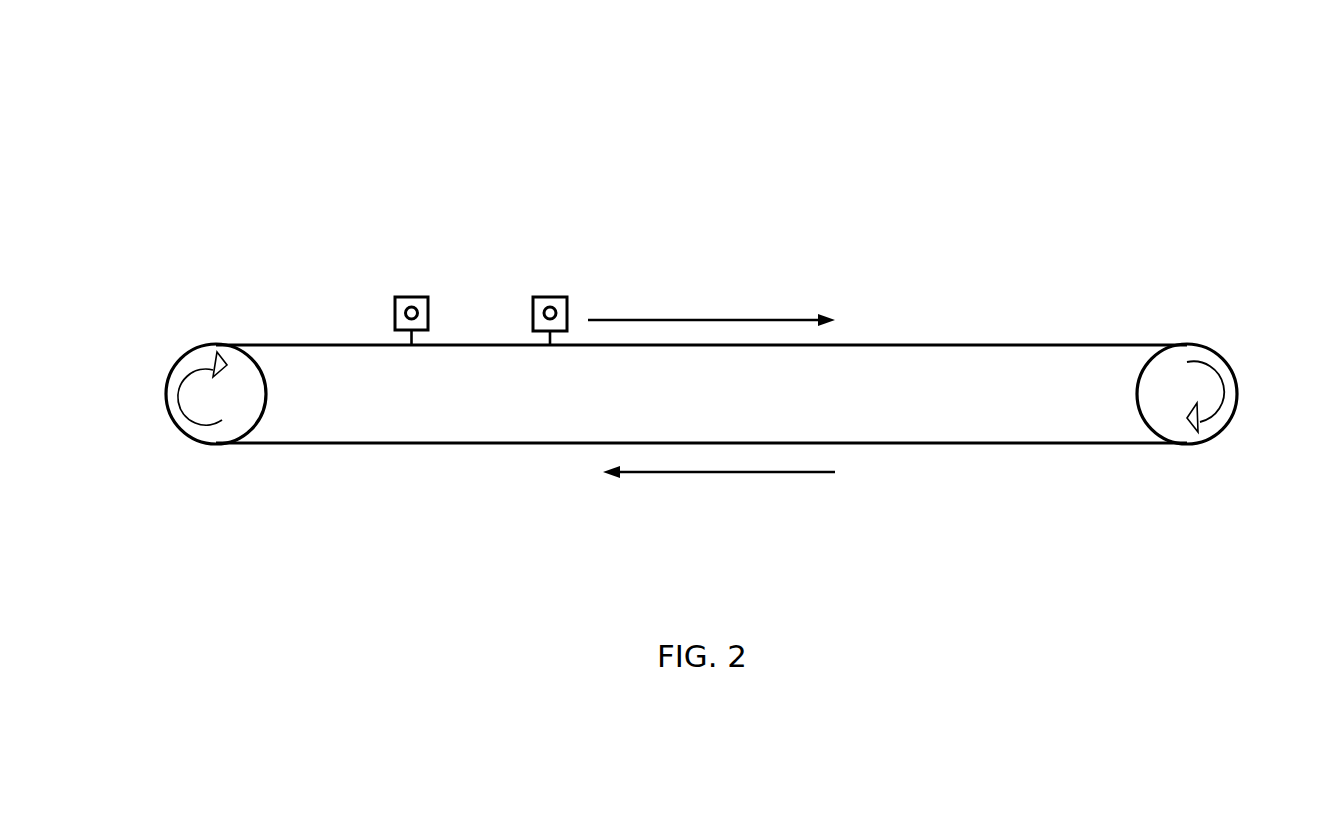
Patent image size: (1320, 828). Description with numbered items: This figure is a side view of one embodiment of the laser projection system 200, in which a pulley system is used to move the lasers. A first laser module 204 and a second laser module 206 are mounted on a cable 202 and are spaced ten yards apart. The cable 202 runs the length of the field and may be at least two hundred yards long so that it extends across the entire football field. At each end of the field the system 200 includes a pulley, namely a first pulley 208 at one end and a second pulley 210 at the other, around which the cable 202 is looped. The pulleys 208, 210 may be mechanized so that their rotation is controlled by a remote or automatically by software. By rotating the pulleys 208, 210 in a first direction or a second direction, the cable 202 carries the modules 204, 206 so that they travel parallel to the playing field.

The laser projection system 200 is at (1193, 238).
The cable 202 is at (473, 443).
The first laser module 204 is at (557, 303).
The second laser module 206 is at (397, 298).
The first pulley 208 is at (1199, 387).
The second pulley 210 is at (208, 388).